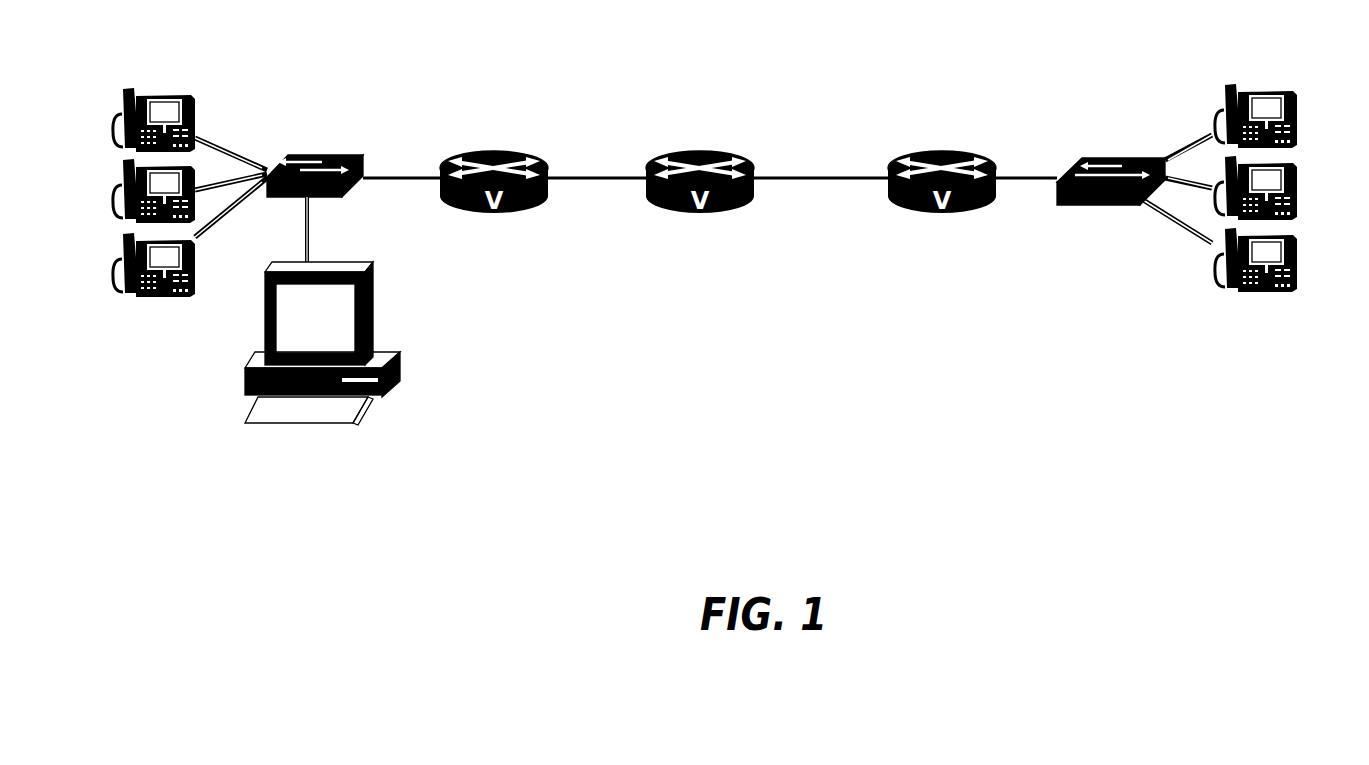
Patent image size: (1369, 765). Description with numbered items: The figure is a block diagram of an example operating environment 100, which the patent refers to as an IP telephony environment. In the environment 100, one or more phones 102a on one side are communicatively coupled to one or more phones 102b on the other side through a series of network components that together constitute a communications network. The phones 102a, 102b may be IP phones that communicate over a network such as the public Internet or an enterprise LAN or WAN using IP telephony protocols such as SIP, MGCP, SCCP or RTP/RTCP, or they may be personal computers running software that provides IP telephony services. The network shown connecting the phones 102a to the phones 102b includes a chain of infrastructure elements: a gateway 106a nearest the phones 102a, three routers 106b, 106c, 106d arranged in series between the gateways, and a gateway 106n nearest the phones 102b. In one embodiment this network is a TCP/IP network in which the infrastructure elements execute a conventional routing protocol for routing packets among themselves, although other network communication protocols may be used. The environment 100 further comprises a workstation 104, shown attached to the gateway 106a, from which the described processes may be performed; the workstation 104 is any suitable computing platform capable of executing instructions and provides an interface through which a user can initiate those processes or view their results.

The operating environment 100 is at (551, 421).
The phones 102a is at (112, 153).
The phones 102b is at (1297, 133).
The workstation 104 is at (312, 420).
The gateway 106a is at (338, 160).
The router 106b is at (500, 152).
The router 106c is at (713, 152).
The router 106d is at (946, 152).
The gateway 106n is at (1120, 158).